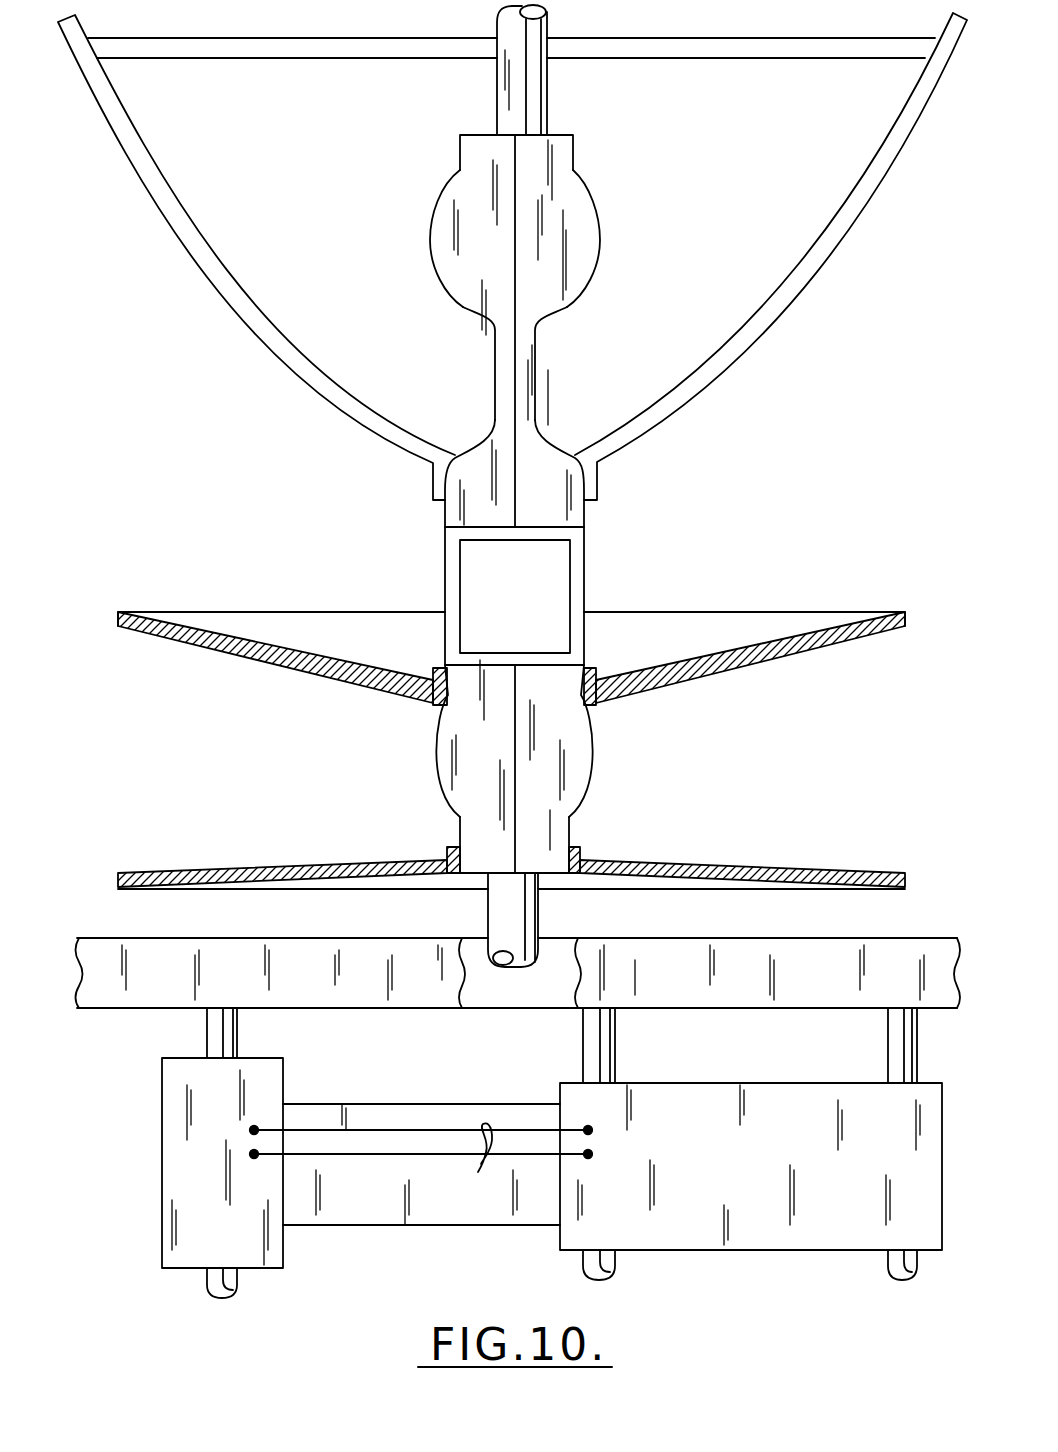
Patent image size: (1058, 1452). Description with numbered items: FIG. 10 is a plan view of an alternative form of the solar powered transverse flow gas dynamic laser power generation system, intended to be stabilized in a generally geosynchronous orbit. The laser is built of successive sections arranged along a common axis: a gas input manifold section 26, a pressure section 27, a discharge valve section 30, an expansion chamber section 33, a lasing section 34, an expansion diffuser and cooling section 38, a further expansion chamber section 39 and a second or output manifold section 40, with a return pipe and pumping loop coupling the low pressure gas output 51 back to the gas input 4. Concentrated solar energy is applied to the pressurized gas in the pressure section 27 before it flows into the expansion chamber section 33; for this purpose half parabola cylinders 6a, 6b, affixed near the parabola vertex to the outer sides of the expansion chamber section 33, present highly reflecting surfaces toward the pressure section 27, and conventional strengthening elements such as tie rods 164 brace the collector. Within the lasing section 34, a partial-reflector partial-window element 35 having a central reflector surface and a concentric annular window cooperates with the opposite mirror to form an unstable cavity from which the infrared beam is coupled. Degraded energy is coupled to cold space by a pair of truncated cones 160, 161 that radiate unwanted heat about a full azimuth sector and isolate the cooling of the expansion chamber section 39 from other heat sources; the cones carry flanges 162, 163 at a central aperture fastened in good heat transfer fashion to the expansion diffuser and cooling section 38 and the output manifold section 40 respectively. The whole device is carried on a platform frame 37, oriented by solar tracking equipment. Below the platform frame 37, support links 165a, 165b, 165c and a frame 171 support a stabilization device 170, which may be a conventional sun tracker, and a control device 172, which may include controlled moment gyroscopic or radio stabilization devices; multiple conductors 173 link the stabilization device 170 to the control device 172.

The gas input 4 is at (548, 97).
The half parabola cylinder 6a is at (179, 200).
The half parabola cylinder 6b is at (838, 252).
The gas input manifold section 26 is at (575, 155).
The pressure section 27 is at (600, 232).
The discharge valve section 30 is at (543, 375).
The expansion chamber section 33 is at (574, 517).
The lasing section 34 is at (584, 562).
The partial-reflector partial-window element 35 is at (548, 588).
The platform frame 37 is at (800, 938).
The expansion diffuser and cooling section 38 is at (596, 682).
The expansion chamber section 39 is at (590, 750).
The output manifold section 40 is at (570, 834).
The low pressure gas output 51 is at (540, 924).
The truncated cone 160 is at (228, 614).
The truncated cone 161 is at (276, 870).
The flange 162 is at (433, 680).
The flange 163 is at (445, 855).
The tie rods 164 is at (682, 38).
The support link 165a is at (212, 1040).
The support link 165b is at (617, 1052).
The support link 165c is at (888, 1062).
The stabilization device 170 is at (283, 1073).
The frame 171 is at (432, 1108).
The control device 172 is at (706, 1243).
The multiple conductors 173 is at (421, 1161).